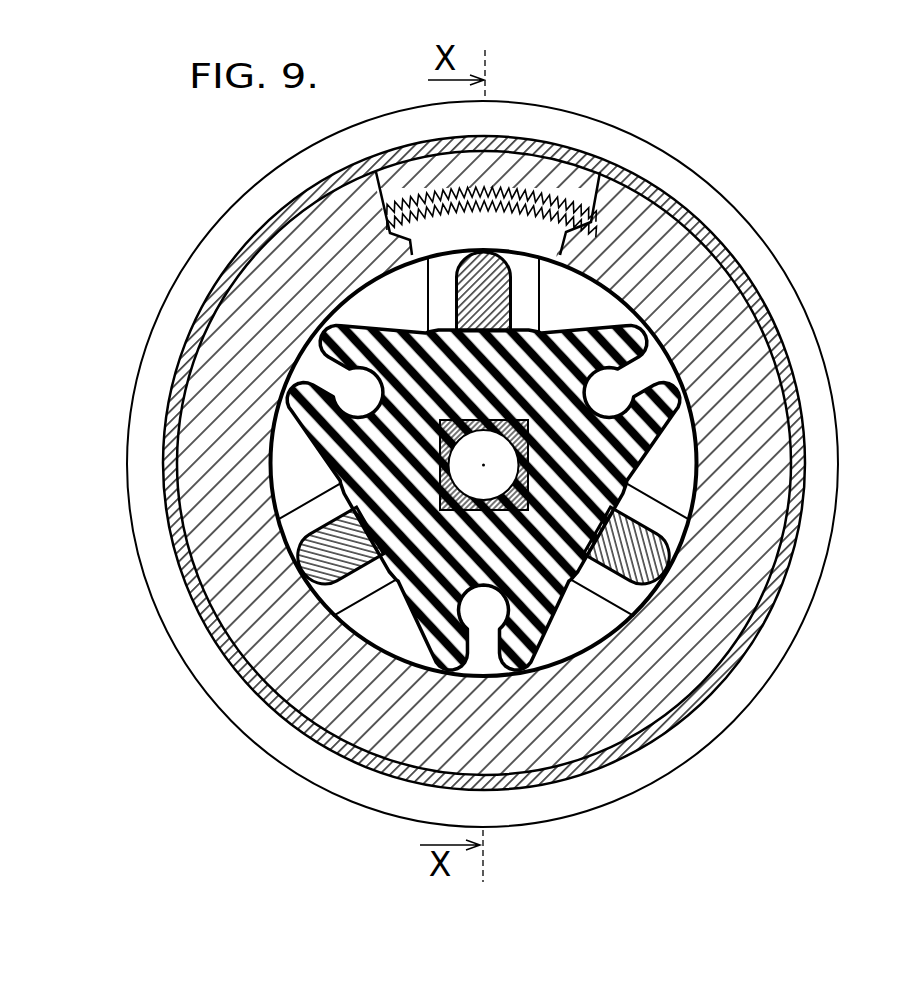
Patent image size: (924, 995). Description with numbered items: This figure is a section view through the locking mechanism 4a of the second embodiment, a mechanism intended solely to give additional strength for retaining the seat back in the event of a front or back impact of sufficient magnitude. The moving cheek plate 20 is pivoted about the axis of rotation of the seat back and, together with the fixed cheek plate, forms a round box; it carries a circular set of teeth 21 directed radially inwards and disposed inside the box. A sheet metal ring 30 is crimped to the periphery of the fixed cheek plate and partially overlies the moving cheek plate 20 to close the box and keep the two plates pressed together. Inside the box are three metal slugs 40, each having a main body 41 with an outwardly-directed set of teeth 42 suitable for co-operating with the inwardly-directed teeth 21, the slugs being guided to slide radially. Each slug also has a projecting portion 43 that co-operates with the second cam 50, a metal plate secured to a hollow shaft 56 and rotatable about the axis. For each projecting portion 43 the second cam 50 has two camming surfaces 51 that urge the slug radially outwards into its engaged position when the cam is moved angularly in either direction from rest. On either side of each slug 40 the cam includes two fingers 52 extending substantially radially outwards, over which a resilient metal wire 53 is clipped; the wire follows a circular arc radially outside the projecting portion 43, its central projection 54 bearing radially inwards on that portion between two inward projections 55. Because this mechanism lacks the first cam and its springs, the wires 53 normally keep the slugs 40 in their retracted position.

The locking mechanism 4a is at (673, 126).
The moving cheek plate 20 is at (670, 683).
The circular set of teeth 21 is at (540, 232).
The sheet metal ring 30 is at (712, 205).
The metal slug 40 is at (578, 503).
The main body 41 is at (570, 292).
The outwardly-directed set of teeth 42 is at (380, 188).
The projecting portion 43 is at (640, 210).
The second cam 50 is at (486, 468).
The camming surface 51 is at (425, 296).
The finger 52 is at (475, 585).
The resilient metal wire 53 is at (527, 313).
The projection 54 is at (485, 374).
The projection 55 is at (455, 258).
The shaft 56 is at (556, 625).